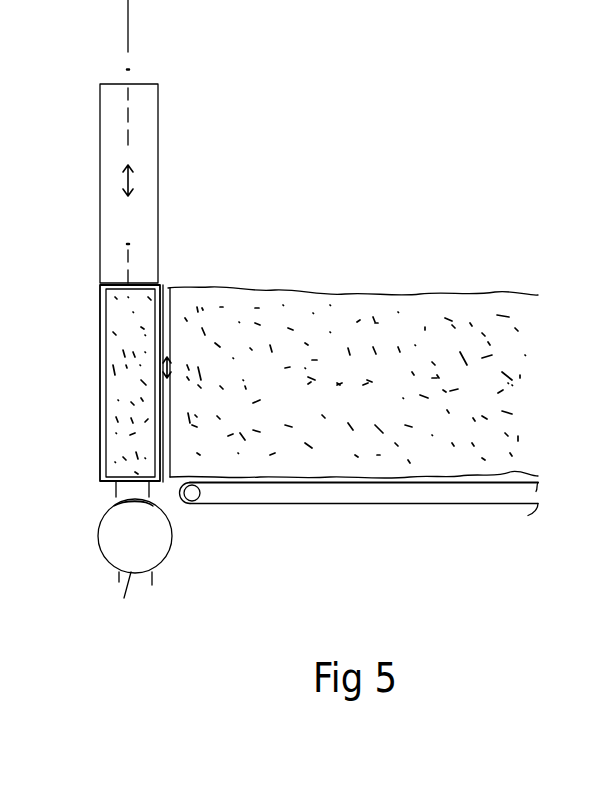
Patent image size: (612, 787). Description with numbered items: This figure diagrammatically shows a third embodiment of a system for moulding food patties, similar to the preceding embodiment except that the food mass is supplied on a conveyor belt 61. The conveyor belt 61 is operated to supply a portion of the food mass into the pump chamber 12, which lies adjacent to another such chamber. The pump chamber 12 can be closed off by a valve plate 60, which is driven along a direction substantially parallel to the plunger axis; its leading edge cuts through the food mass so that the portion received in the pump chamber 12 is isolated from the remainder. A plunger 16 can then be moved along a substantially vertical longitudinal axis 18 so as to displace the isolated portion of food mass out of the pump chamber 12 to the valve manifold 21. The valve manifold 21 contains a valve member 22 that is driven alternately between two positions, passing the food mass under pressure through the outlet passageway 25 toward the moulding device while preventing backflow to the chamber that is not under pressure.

The longitudinal axis 18 is at (128, 23).
The plunger 16 is at (115, 147).
The pump chamber 12 is at (101, 373).
The valve plate 60 is at (165, 330).
The conveyor belt 61 is at (382, 483).
The valve manifold 21 is at (124, 537).
The valve member 22 is at (129, 506).
The outlet passageway 25 is at (140, 547).